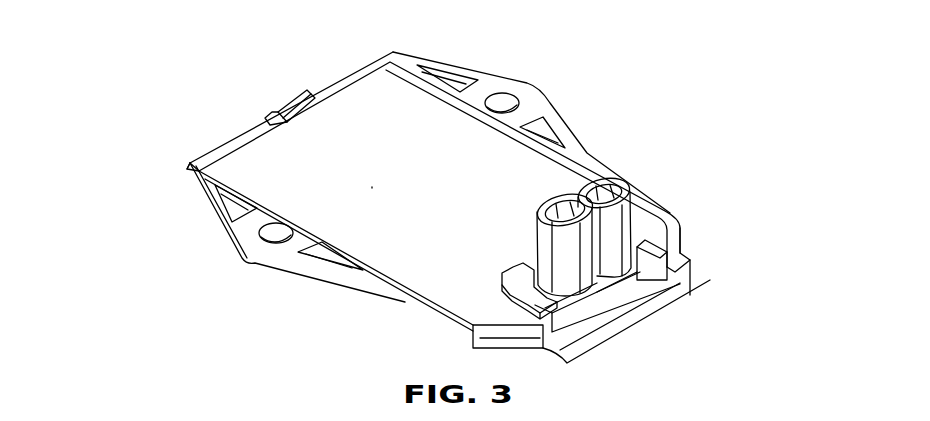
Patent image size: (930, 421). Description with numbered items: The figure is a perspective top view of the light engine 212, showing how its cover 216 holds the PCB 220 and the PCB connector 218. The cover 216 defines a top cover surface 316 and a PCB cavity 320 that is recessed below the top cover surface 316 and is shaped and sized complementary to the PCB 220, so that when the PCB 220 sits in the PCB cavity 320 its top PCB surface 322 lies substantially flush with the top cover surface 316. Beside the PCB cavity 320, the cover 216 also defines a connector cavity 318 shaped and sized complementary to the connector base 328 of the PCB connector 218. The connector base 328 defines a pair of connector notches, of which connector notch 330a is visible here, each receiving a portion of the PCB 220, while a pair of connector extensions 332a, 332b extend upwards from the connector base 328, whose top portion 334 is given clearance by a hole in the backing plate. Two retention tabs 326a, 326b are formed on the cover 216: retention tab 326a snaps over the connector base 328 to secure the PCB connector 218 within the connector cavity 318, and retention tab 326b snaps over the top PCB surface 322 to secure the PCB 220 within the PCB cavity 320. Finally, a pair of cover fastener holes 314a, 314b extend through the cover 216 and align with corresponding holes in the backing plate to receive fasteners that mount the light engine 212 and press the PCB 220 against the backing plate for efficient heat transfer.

The light engine 212 is at (158, 53).
The cover 216 is at (188, 167).
The PCB connector 218 is at (680, 268).
The PCB 220 is at (372, 97).
The cover fastener hole 314a is at (503, 100).
The cover fastener hole 314b is at (283, 243).
The top cover surface 316 is at (244, 227).
The connector cavity 318 is at (682, 262).
The PCB cavity 320 is at (200, 163).
The top PCB surface 322 is at (372, 187).
The retention tab 326a is at (607, 277).
The retention tab 326b is at (297, 100).
The connector base 328 is at (583, 300).
The connector notch 330a is at (540, 333).
The connector extension 332a is at (633, 207).
The connector extension 332b is at (553, 240).
The top portion of the connector base 334 is at (510, 278).